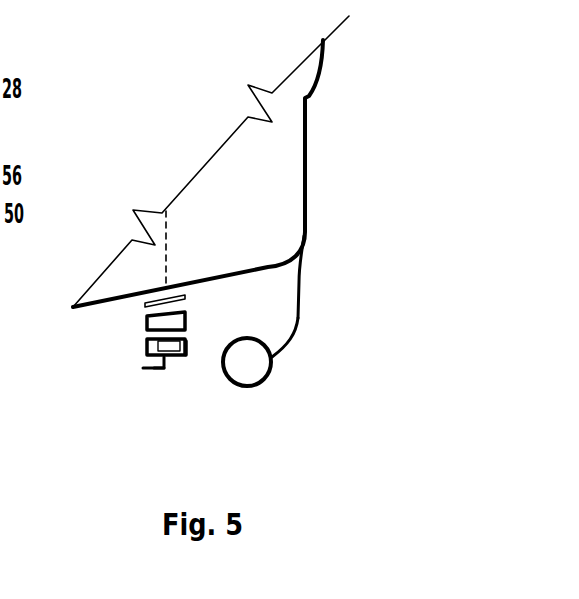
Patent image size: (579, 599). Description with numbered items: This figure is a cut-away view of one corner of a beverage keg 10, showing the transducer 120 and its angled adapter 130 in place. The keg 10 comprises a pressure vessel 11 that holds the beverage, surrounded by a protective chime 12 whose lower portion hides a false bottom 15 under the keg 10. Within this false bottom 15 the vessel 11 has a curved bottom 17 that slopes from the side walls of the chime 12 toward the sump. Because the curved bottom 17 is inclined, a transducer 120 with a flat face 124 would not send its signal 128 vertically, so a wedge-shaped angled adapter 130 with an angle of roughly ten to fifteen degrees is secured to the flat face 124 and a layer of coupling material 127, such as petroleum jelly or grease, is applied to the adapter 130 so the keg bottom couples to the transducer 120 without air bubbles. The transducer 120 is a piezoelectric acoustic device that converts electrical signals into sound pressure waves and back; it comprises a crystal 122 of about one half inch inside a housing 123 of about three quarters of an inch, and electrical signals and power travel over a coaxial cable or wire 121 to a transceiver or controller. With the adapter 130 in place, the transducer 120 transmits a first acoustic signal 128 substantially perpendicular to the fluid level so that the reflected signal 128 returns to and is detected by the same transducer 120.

The keg 10 is at (262, 375).
The pressure vessel 11 is at (265, 193).
The chime 12 is at (288, 340).
The false bottom 15 is at (268, 292).
The curved bottom 17 is at (247, 272).
The transducer 120 is at (143, 368).
The coaxial cable or wire 121 is at (154, 372).
The crystal 122 is at (163, 347).
The housing 123 is at (188, 357).
The flat face 124 is at (143, 357).
The coupling material 127 is at (147, 304).
The signal 128 is at (171, 237).
The angled adapter 130 is at (147, 338).